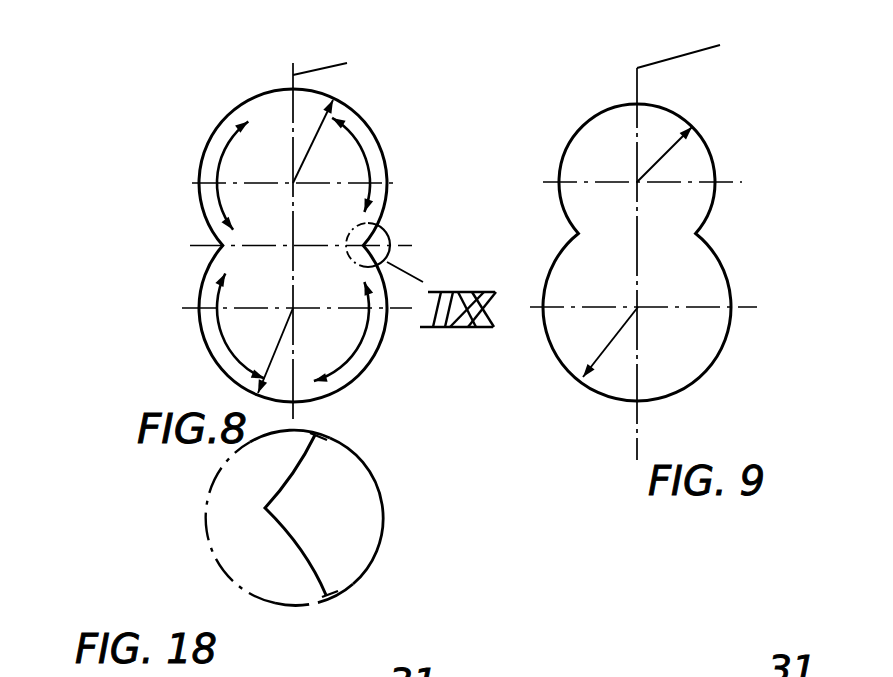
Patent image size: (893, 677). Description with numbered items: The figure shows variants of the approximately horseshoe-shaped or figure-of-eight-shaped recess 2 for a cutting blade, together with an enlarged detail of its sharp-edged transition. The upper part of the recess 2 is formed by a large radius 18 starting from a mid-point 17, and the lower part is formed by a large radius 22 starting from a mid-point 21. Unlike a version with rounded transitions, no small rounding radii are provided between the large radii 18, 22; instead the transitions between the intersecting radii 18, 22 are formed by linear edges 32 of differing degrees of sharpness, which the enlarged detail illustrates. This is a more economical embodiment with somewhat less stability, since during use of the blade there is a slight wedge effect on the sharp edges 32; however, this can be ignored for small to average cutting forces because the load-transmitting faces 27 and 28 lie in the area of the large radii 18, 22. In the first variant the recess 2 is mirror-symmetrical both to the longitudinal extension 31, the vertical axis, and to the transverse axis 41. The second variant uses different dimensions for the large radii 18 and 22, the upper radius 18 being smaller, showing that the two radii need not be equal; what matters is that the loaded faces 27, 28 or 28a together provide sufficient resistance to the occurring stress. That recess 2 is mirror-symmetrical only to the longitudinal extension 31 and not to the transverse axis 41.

In FIG. 18, the recess 2 is at (226, 497).
In FIG. 9, the mid-point 17 is at (637, 182).
In FIG. 9, the radius 18 is at (663, 157).
In FIG. 9, the mid-point 21 is at (638, 307).
In FIG. 8, the radius 22 is at (193, 267).
In FIG. 9, the radius 22 is at (612, 342).
In FIG. 8, the load-transmitting face 27 is at (218, 153).
In FIG. 8, the load-transmitting face 28 is at (355, 355).
In FIG. 8, the face 28a is at (257, 371).
In FIG. 8, the longitudinal extension 31 is at (346, 49).
In FIG. 9, the longitudinal extension 31 is at (706, 45).
In FIG. 8, the edges 32 is at (364, 247).
In FIG. 9, the edges 32 is at (490, 232).
In FIG. 18, the edges 32 is at (265, 508).
In FIG. 8, the transverse axis 41 is at (222, 246).